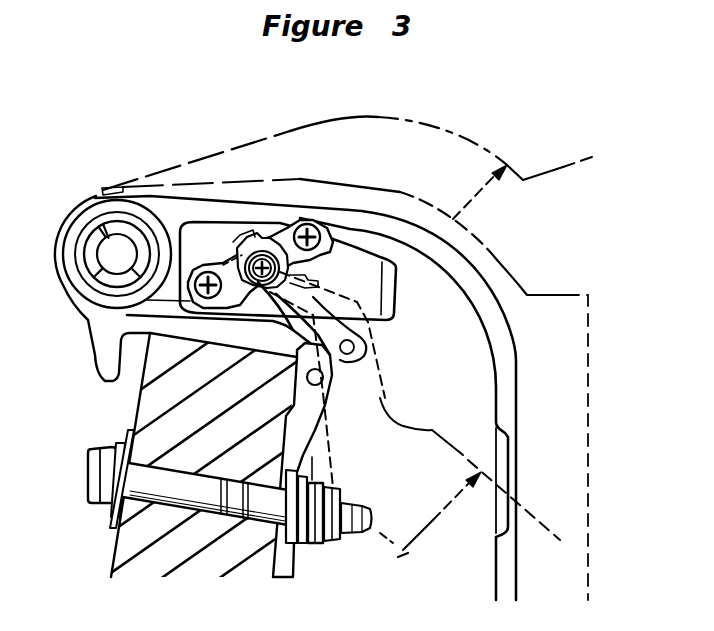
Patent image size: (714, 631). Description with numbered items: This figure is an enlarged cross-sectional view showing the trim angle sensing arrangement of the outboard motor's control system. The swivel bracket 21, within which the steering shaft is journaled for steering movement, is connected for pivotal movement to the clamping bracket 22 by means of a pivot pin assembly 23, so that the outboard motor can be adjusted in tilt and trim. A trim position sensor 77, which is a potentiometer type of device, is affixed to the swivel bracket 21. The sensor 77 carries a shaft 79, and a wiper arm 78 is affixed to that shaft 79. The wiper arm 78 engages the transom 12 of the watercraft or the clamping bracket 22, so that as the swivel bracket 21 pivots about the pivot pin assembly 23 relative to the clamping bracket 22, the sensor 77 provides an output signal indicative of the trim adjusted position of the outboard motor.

The transom 12 is at (147, 410).
The swivel bracket 21 is at (502, 275).
The clamping bracket 22 is at (100, 380).
The pivot pin assembly 23 is at (113, 286).
The trim position sensor 77 is at (380, 246).
The wiper arm 78 is at (320, 362).
The shaft 79 is at (283, 227).